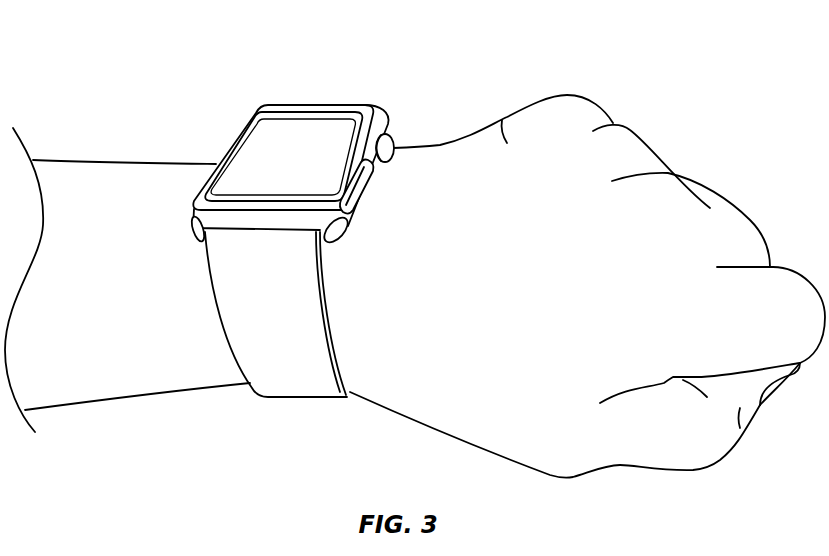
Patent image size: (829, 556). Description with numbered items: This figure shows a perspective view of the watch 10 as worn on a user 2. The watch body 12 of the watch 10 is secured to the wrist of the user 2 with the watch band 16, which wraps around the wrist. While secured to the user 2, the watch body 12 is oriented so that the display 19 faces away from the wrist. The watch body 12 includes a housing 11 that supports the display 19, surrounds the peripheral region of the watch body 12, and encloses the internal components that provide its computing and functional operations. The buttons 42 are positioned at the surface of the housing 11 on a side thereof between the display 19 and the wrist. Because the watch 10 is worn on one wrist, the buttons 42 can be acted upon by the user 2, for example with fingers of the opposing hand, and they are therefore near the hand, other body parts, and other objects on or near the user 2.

The user 2 is at (512, 115).
The watch 10 is at (329, 238).
The housing 11 is at (373, 103).
The watch body 12 is at (268, 103).
The display 19 is at (327, 130).
The watch band 16 is at (282, 377).
The buttons 42 is at (393, 152).